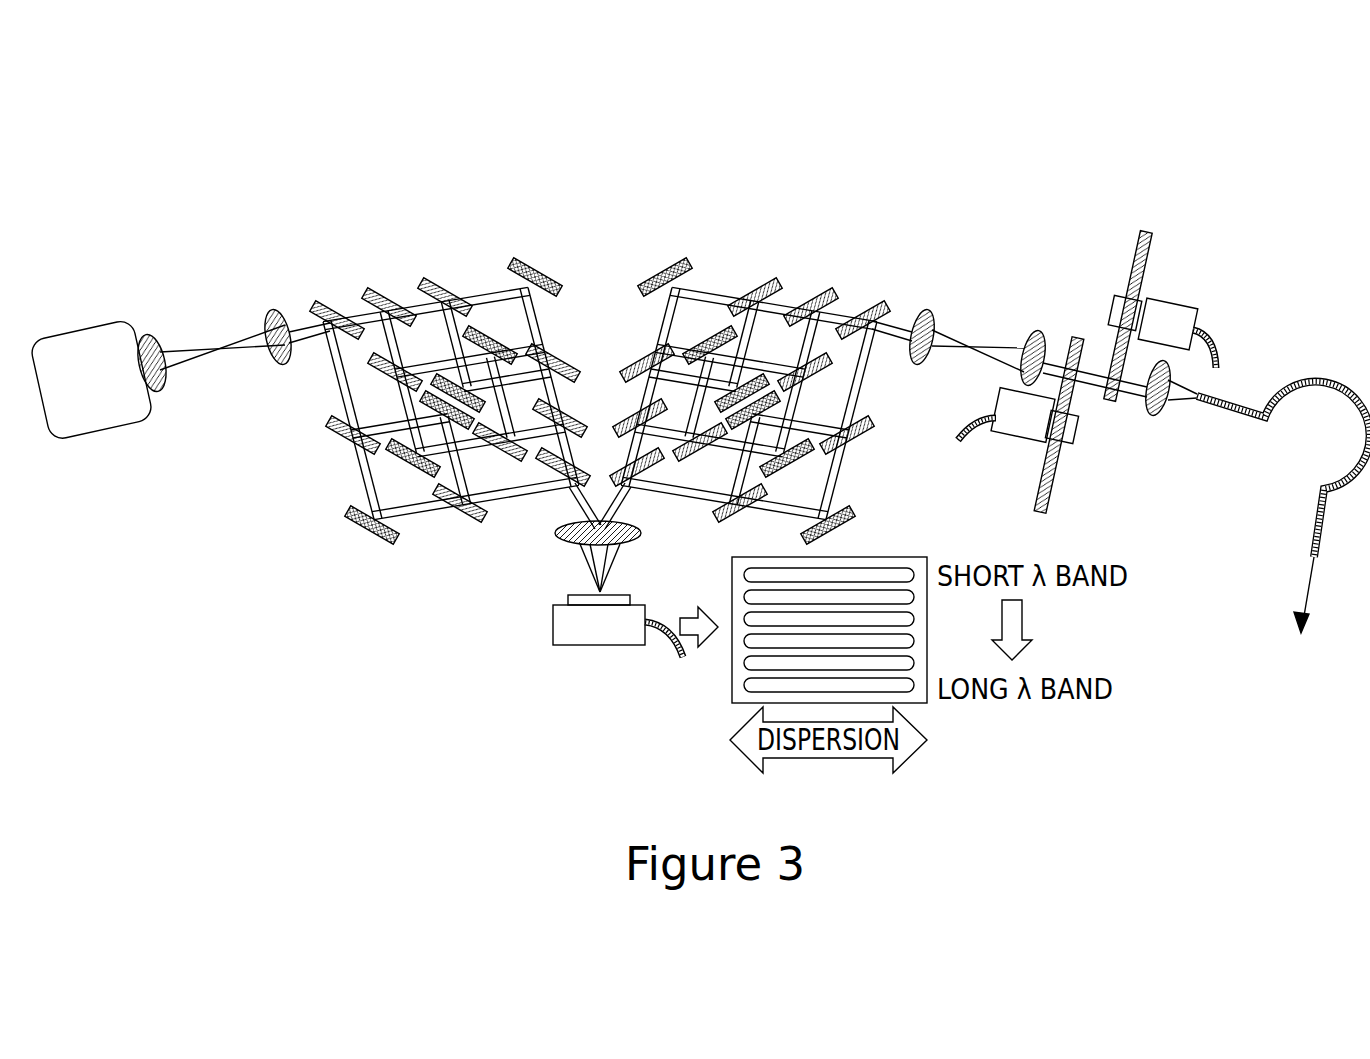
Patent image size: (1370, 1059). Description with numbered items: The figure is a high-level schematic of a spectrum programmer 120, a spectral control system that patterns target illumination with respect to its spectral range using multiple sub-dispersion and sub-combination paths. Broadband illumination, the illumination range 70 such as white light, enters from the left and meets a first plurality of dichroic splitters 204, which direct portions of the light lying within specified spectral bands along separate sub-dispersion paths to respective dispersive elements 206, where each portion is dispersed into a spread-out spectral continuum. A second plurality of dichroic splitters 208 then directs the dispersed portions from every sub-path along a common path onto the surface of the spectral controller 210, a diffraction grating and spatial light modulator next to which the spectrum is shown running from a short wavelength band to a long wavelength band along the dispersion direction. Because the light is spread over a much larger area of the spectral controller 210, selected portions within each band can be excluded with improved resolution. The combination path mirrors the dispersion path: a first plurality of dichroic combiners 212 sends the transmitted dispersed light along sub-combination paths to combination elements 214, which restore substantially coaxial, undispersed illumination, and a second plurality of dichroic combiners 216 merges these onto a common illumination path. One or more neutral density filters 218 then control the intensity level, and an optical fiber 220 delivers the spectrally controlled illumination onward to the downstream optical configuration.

The spectrum programmer 120 is at (103, 85).
The illumination range 70 is at (75, 328).
The first plurality of dichroic splitters 204 is at (435, 270).
The dispersive elements 206 is at (569, 281).
The second plurality of dichroic splitters 208 is at (550, 531).
The spectral controller 210 is at (592, 648).
The first plurality of dichroic combiners 212 is at (778, 528).
The combination elements 214 is at (631, 281).
The second plurality of dichroic combiners 216 is at (895, 297).
The neutral density filter 218 is at (1084, 300).
The optical fiber 220 is at (1297, 412).